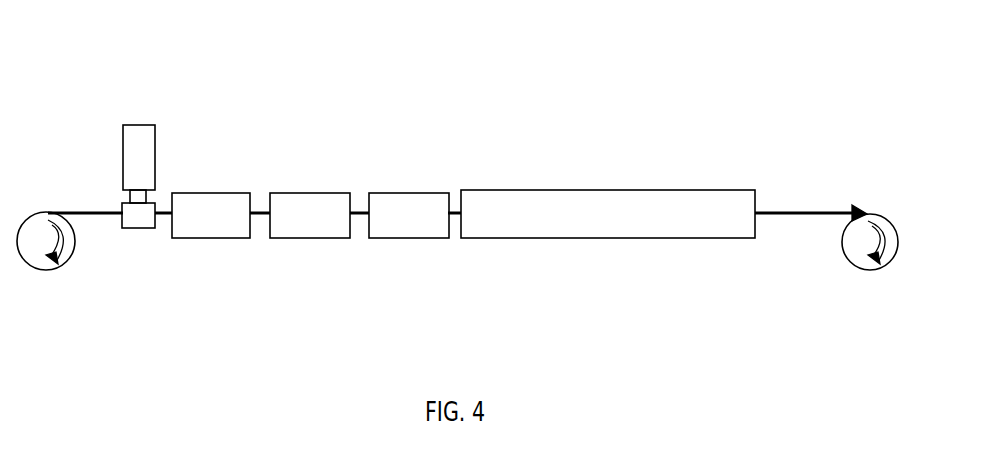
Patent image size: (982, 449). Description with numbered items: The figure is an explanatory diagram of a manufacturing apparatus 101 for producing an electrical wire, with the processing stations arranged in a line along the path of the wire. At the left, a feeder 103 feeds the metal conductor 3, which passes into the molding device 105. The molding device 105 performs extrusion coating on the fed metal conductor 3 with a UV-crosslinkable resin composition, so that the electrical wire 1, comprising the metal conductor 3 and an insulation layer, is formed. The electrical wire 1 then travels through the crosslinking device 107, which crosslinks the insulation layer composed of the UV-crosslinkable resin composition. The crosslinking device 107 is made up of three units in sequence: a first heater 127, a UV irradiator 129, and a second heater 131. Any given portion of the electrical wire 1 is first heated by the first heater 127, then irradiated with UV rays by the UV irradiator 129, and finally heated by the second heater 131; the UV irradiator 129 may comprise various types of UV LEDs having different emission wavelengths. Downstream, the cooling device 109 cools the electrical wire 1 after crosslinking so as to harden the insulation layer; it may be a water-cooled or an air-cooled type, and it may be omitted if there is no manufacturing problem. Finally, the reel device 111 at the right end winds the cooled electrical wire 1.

The manufacturing apparatus 101 is at (593, 91).
The electrical wire 1 is at (163, 229).
The metal conductor 3 is at (97, 212).
The feeder 103 is at (47, 270).
The molding device 105 is at (157, 142).
The crosslinking device 107 is at (310, 278).
The cooling device 109 is at (607, 238).
The reel device 111 is at (870, 270).
The first heater 127 is at (213, 238).
The UV irradiator 129 is at (315, 238).
The second heater 131 is at (397, 253).